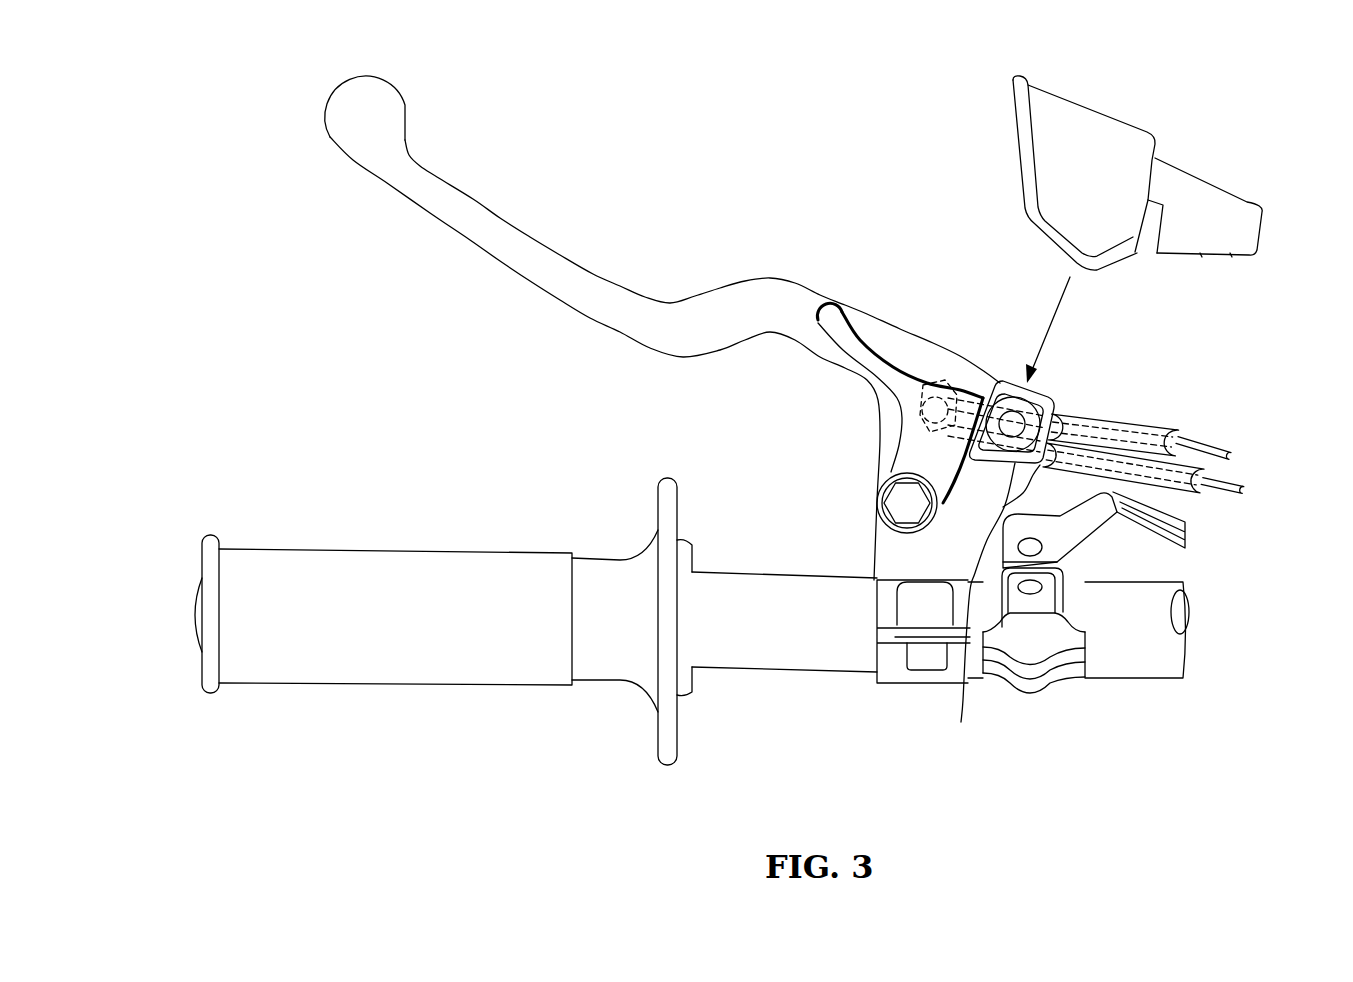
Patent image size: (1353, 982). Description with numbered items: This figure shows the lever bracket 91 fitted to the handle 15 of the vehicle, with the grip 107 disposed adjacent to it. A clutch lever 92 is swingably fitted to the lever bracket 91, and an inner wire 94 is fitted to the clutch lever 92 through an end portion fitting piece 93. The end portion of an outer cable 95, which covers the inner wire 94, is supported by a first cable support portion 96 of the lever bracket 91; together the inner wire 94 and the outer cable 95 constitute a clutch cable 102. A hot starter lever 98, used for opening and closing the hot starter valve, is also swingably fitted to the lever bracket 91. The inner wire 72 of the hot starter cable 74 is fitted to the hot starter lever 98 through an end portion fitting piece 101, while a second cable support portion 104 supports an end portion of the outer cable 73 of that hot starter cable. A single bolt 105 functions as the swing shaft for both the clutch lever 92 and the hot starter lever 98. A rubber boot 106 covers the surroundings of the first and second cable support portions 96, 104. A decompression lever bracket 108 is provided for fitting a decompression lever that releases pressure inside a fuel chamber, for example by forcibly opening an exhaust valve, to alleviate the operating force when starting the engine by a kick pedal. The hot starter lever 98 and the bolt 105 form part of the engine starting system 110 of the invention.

The handle 15 is at (785, 676).
The inner wire 72 is at (1227, 490).
The outer cable 73 is at (1187, 497).
The hot starter cable 74 is at (1250, 499).
The lever bracket 91 is at (873, 550).
The clutch lever 92 is at (512, 225).
The end portion fitting piece 93 is at (920, 384).
The inner wire 94 is at (1213, 453).
The outer cable 95 is at (1113, 420).
The first cable support portion 96 is at (1077, 400).
The hot starter lever 98 is at (848, 322).
The end portion fitting piece 101 is at (925, 424).
The clutch cable 102 is at (1163, 418).
The second cable support portion 104 is at (975, 690).
The bolt 105 is at (877, 498).
The rubber boot 106 is at (1127, 121).
The grip 107 is at (360, 548).
The decompression lever bracket 108 is at (1095, 590).
The engine starting system 110 is at (860, 465).